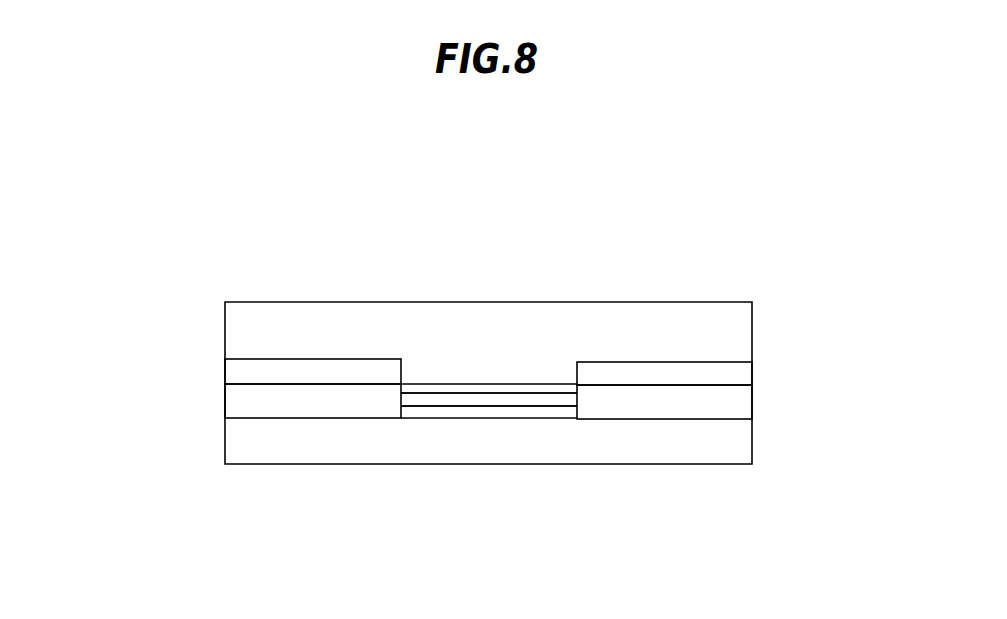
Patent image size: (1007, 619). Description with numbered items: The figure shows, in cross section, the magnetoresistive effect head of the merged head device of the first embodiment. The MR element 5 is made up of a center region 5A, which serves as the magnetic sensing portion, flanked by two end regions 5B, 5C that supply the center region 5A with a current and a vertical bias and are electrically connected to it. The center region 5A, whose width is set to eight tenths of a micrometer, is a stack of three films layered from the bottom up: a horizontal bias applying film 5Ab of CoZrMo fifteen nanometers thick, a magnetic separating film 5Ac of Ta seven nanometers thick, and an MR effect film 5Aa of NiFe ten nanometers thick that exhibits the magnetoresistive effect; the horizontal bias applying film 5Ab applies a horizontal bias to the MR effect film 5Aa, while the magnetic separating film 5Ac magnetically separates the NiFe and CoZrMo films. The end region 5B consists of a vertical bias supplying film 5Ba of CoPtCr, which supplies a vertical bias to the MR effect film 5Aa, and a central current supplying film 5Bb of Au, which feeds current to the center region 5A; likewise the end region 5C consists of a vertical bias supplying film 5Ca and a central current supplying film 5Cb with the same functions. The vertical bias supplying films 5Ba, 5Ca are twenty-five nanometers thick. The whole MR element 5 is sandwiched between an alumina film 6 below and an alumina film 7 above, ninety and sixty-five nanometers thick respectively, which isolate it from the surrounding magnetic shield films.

The MR element 5 is at (472, 376).
The center region 5A is at (529, 303).
The MR effect film 5Aa is at (438, 390).
The horizontal bias applying film 5Ab is at (495, 400).
The magnetic separating film 5Ac is at (538, 415).
The end region 5B is at (669, 463).
The vertical bias supplying film 5Ba is at (694, 406).
The central current supplying film 5Bb is at (642, 376).
The end region 5C is at (224, 388).
The vertical bias supplying film 5Ca is at (238, 402).
The central current supplying film 5Cb is at (238, 373).
The alumina film 6 is at (307, 455).
The alumina film 7 is at (273, 306).